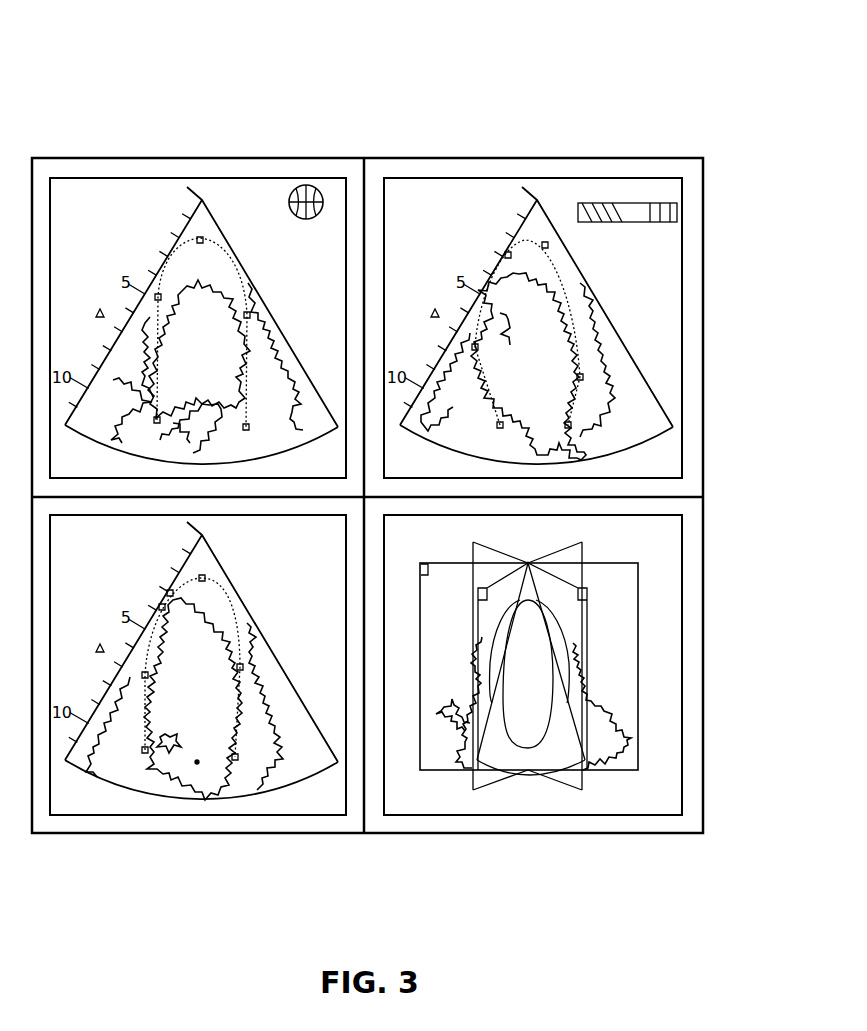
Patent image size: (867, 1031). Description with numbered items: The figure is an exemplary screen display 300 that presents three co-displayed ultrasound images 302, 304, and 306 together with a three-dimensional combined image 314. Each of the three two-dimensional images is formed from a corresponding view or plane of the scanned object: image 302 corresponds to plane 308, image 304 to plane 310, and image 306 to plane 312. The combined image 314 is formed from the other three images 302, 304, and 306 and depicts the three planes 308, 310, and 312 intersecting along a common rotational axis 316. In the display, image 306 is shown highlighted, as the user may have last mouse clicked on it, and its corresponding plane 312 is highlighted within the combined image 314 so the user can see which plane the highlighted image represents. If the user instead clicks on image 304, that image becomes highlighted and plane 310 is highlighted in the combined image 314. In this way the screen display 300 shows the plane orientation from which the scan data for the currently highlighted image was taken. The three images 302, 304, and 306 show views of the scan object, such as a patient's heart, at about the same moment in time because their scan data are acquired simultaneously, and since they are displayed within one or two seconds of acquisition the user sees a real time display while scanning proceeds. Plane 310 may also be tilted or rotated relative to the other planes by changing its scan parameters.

The screen display 300 is at (232, 67).
The ultrasound image 302 is at (188, 176).
The ultrasound image 304 is at (229, 822).
The ultrasound image 306 is at (537, 176).
The plane 308 is at (427, 760).
The plane 310 is at (482, 783).
The plane 312 is at (572, 783).
The 3D combined image 314 is at (550, 713).
The common rotational axis 316 is at (527, 758).